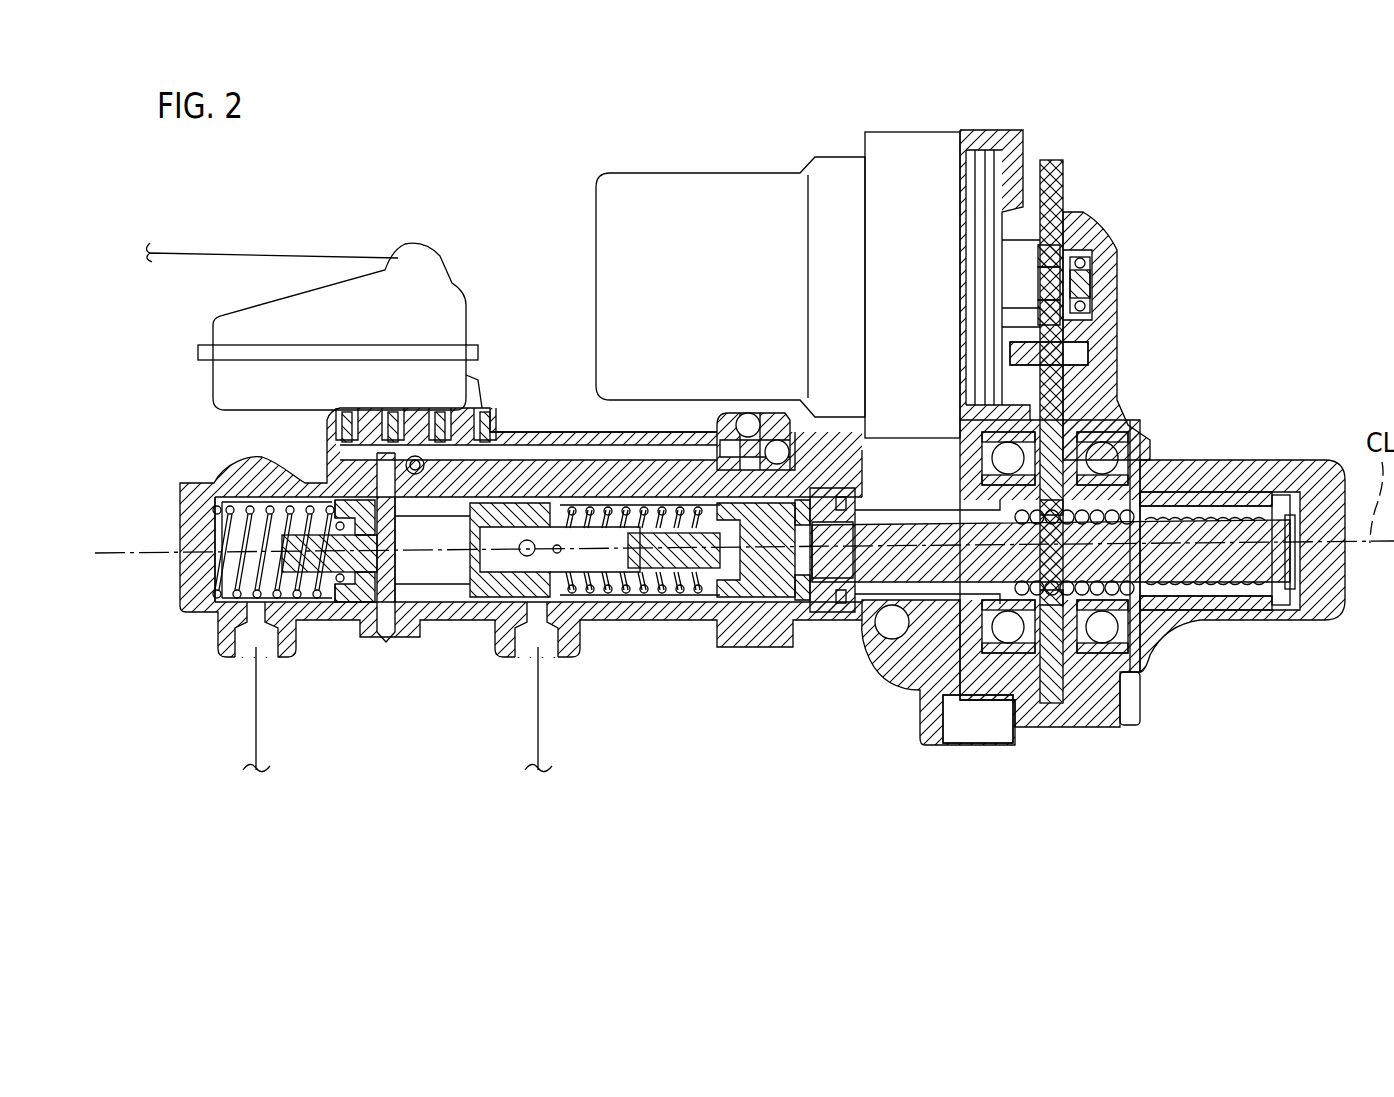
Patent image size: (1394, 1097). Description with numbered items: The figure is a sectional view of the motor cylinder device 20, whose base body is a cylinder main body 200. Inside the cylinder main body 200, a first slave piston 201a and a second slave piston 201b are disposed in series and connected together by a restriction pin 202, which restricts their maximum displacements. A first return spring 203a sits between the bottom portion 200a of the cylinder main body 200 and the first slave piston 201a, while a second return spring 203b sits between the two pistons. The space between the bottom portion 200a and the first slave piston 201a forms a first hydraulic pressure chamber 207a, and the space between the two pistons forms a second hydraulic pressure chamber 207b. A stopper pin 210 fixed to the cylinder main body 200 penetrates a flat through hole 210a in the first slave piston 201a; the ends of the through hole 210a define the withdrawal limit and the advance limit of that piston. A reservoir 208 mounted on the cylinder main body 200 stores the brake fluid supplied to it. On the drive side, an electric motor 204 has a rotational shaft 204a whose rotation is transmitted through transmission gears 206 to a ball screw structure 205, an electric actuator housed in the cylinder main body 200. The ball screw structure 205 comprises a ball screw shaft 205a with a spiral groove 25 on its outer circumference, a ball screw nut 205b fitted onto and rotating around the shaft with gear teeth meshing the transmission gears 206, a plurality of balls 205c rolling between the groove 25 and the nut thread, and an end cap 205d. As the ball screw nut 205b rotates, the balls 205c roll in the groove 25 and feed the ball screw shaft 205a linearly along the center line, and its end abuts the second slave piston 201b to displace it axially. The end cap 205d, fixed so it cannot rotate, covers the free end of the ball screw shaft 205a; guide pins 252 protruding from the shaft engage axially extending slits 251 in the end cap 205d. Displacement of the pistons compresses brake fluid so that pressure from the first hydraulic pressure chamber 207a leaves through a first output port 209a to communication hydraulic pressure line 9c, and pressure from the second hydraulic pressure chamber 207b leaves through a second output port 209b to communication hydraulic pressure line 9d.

The motor cylinder device 20 is at (1064, 96).
The spiral groove 25 is at (1162, 520).
The cylinder main body 200 is at (190, 516).
The bottom portion 200a is at (196, 596).
The first slave piston 201a is at (463, 570).
The second slave piston 201b is at (768, 588).
The restriction pin 202 is at (678, 568).
The first return spring 203a is at (334, 608).
The second return spring 203b is at (700, 592).
The electric motor 204 is at (712, 205).
The rotational shaft 204a is at (1082, 283).
The ball screw structure 205 is at (1374, 812).
The ball screw shaft 205a is at (905, 545).
The ball screw nut 205b is at (1126, 682).
The balls 205c is at (1010, 585).
The end cap 205d is at (1245, 612).
The transmission gears 206 is at (1050, 250).
The first hydraulic pressure chamber 207a is at (238, 500).
The second hydraulic pressure chamber 207b is at (612, 596).
The reservoir 208 is at (450, 305).
The first output port 209a is at (247, 650).
The second output port 209b is at (550, 648).
The stopper pin 210 is at (386, 640).
The through hole 210a is at (418, 596).
The slits 251 is at (1210, 492).
The guide pins 252 is at (1278, 500).
The communication hydraulic pressure line 9c is at (263, 733).
The communication hydraulic pressure line 9d is at (530, 733).